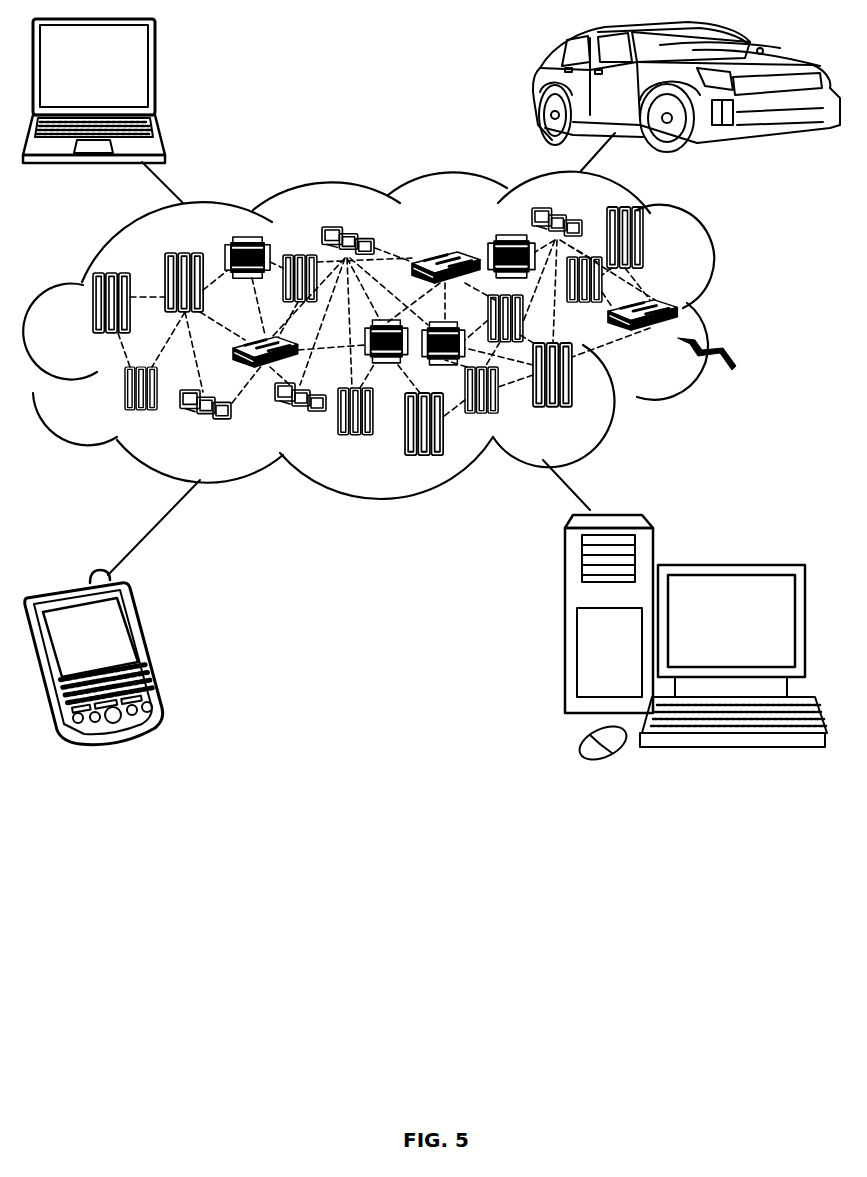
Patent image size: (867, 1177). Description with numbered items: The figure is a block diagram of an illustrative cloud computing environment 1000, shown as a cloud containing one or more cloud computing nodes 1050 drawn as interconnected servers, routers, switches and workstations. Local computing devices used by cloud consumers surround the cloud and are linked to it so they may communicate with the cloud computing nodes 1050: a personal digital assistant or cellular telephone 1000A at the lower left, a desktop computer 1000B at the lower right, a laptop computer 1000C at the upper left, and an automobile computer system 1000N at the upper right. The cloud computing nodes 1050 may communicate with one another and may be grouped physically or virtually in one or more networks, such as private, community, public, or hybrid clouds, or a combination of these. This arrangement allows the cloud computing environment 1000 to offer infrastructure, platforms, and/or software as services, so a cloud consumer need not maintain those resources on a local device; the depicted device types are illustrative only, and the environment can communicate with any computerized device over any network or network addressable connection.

The cloud computing environment 1000 is at (735, 308).
The personal digital assistant (PDA) or cellular telephone 1000A is at (147, 643).
The desktop computer 1000B is at (728, 563).
The laptop computer 1000C is at (155, 72).
The automobile computer system 1000N is at (538, 88).
The cloud computing nodes 1050 is at (735, 359).